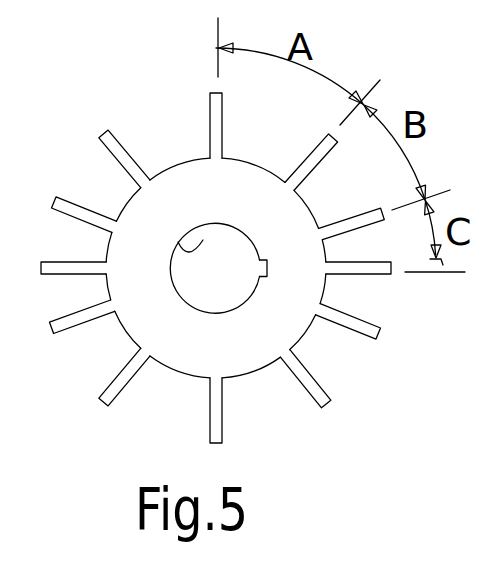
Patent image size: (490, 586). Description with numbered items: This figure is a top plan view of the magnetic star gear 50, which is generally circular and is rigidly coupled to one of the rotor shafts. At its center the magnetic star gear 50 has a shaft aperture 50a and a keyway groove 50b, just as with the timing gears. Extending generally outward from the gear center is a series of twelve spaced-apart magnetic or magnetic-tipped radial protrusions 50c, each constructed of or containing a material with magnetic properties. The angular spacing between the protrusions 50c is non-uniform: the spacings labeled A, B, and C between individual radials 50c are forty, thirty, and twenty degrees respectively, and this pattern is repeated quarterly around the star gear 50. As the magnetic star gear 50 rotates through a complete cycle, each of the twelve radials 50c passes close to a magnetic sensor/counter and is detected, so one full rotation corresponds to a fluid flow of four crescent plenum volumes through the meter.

The magnetic star gear 50 is at (238, 363).
The shaft aperture 50a is at (203, 240).
The keyway groove 50b is at (268, 268).
The magnetic radial protrusion 50c is at (312, 380).